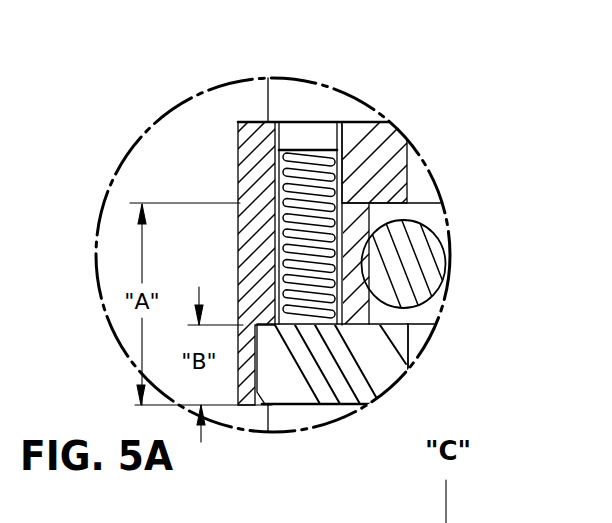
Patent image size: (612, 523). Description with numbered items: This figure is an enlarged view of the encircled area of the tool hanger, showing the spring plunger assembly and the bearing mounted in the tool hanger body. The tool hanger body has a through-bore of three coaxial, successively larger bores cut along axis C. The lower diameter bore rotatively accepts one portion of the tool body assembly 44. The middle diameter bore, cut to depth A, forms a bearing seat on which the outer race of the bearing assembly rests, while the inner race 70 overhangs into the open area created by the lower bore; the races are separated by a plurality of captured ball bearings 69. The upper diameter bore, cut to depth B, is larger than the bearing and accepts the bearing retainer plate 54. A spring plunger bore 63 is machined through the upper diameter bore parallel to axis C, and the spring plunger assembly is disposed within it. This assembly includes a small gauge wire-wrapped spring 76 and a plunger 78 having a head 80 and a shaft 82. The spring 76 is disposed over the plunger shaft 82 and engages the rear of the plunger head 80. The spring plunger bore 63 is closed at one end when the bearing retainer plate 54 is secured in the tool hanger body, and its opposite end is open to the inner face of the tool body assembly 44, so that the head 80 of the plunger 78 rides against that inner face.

The tool body assembly 44 is at (230, 103).
The bearing retainer plate 54 is at (260, 404).
The spring plunger bore 63 is at (407, 177).
The ball bearings 69 is at (427, 250).
The inner race 70 is at (358, 313).
The spring 76 is at (292, 199).
The plunger 78 is at (360, 137).
The plunger head 80 is at (276, 135).
The plunger shaft 82 is at (345, 160).